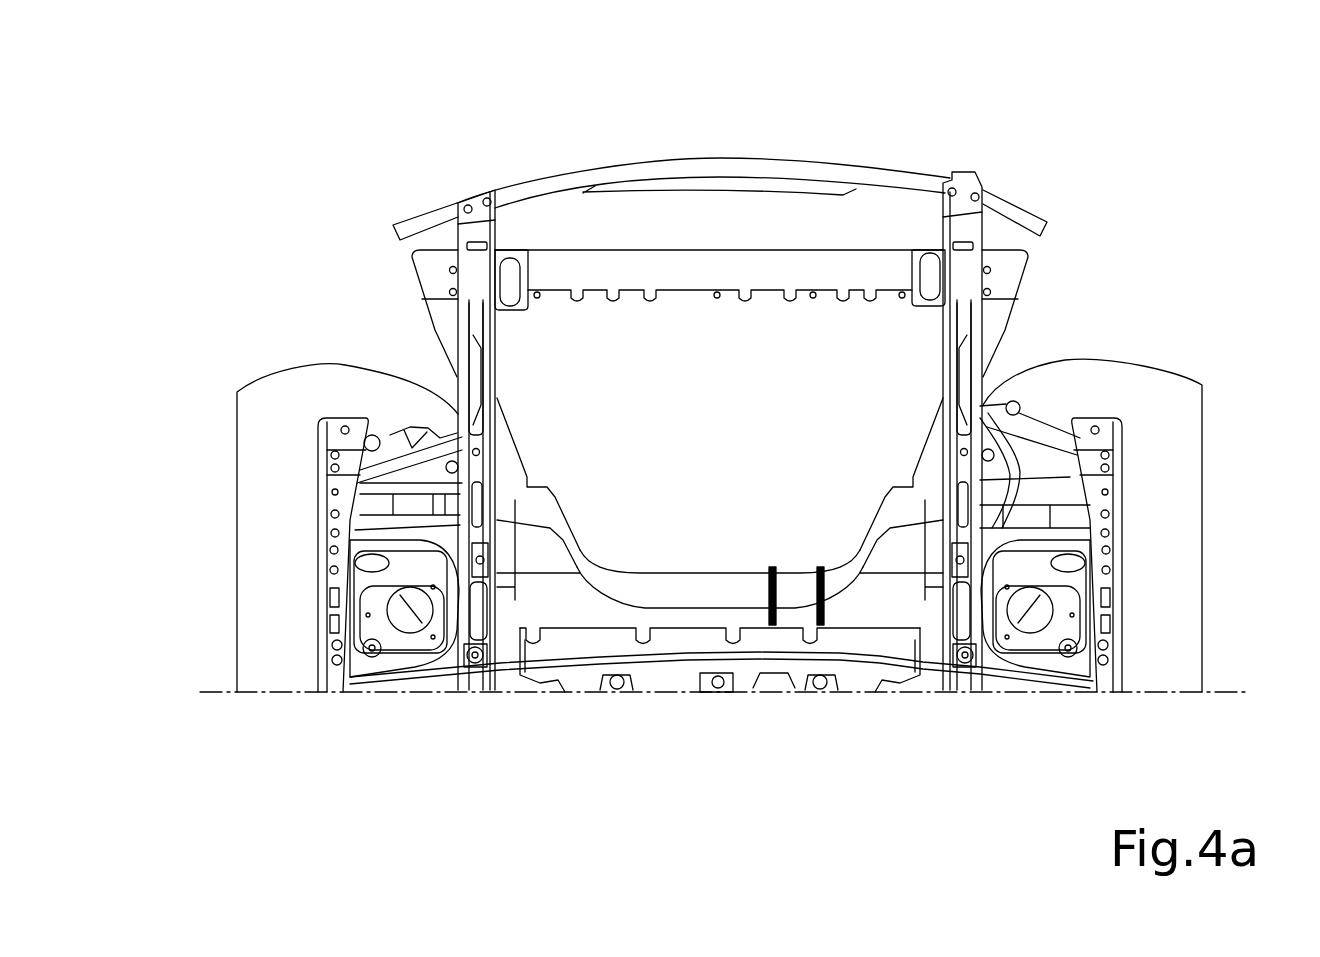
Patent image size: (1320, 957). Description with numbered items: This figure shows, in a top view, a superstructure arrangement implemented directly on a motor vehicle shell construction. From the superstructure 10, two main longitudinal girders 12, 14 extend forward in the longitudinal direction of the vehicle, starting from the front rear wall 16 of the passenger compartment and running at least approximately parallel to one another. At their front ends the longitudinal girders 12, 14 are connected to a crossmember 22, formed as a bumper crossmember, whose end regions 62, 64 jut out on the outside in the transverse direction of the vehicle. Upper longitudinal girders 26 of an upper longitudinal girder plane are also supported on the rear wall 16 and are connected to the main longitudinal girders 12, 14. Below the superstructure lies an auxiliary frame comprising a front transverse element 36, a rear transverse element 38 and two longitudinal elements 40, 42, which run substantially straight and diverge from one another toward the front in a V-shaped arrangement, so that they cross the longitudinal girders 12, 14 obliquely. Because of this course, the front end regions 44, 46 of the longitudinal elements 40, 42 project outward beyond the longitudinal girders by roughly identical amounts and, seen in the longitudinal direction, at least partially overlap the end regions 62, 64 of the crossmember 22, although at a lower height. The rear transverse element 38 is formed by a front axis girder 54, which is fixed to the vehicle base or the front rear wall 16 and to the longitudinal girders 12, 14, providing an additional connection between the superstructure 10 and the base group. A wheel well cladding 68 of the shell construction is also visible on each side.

The superstructure 10 is at (920, 141).
The main longitudinal girder 12 is at (977, 357).
The main longitudinal girder 14 is at (463, 363).
The front rear wall 16 is at (692, 640).
The crossmember 22 is at (702, 163).
The upper longitudinal girder 26 is at (340, 677).
The front transverse element 36 is at (730, 272).
The rear transverse element 38 is at (667, 597).
The longitudinal element 40 is at (943, 450).
The longitudinal element 42 is at (505, 453).
The front end region 44 is at (1007, 278).
The front end region 46 is at (432, 278).
The front axis girder 54 is at (720, 553).
The end region of the transverse girder 62 is at (1018, 215).
The end region of the transverse girder 64 is at (410, 212).
The wheel well cladding 68 is at (273, 556).